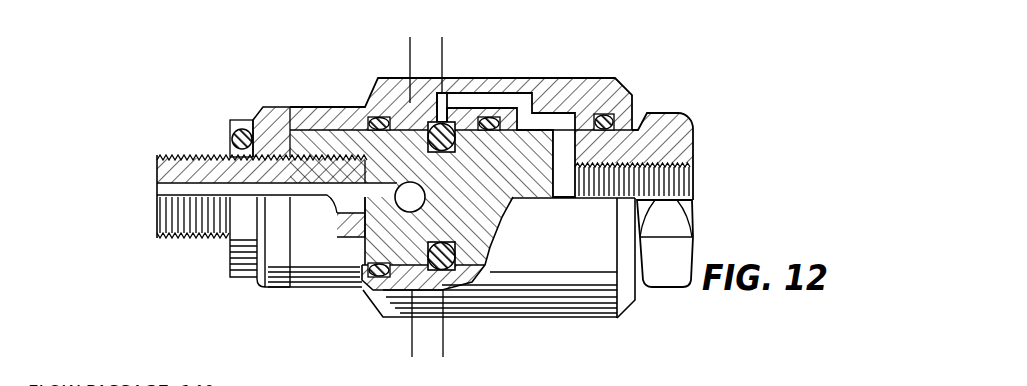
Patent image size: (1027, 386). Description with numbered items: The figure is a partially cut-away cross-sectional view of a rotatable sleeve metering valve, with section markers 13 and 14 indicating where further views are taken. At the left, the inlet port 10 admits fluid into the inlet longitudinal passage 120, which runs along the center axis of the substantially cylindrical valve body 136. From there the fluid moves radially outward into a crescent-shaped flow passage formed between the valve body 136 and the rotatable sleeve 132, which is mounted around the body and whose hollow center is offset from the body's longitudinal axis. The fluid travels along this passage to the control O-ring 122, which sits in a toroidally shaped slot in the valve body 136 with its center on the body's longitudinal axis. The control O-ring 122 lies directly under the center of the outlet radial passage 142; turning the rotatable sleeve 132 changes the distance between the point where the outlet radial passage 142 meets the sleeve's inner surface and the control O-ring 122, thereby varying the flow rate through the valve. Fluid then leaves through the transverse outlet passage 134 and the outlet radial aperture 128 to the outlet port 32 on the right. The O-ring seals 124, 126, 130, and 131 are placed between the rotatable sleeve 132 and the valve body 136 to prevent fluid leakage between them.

The inlet port 10 is at (170, 193).
The outlet port 32 is at (679, 189).
The inlet longitudinal passage 120 is at (337, 197).
The control O-ring 122 is at (426, 270).
The O-ring seal 124 is at (607, 125).
The O-ring seal 126 is at (277, 141).
The outlet radial aperture 128 is at (558, 122).
The O-ring seal 130 is at (497, 118).
The O-ring seal 131 is at (377, 118).
The rotatable sleeve 132 is at (645, 112).
The transverse outlet passage 134 is at (658, 118).
The valve body 136 is at (487, 250).
The outlet radial passage 142 is at (473, 93).
The section line 13 is at (442, 45).
The section line 14 is at (410, 45).